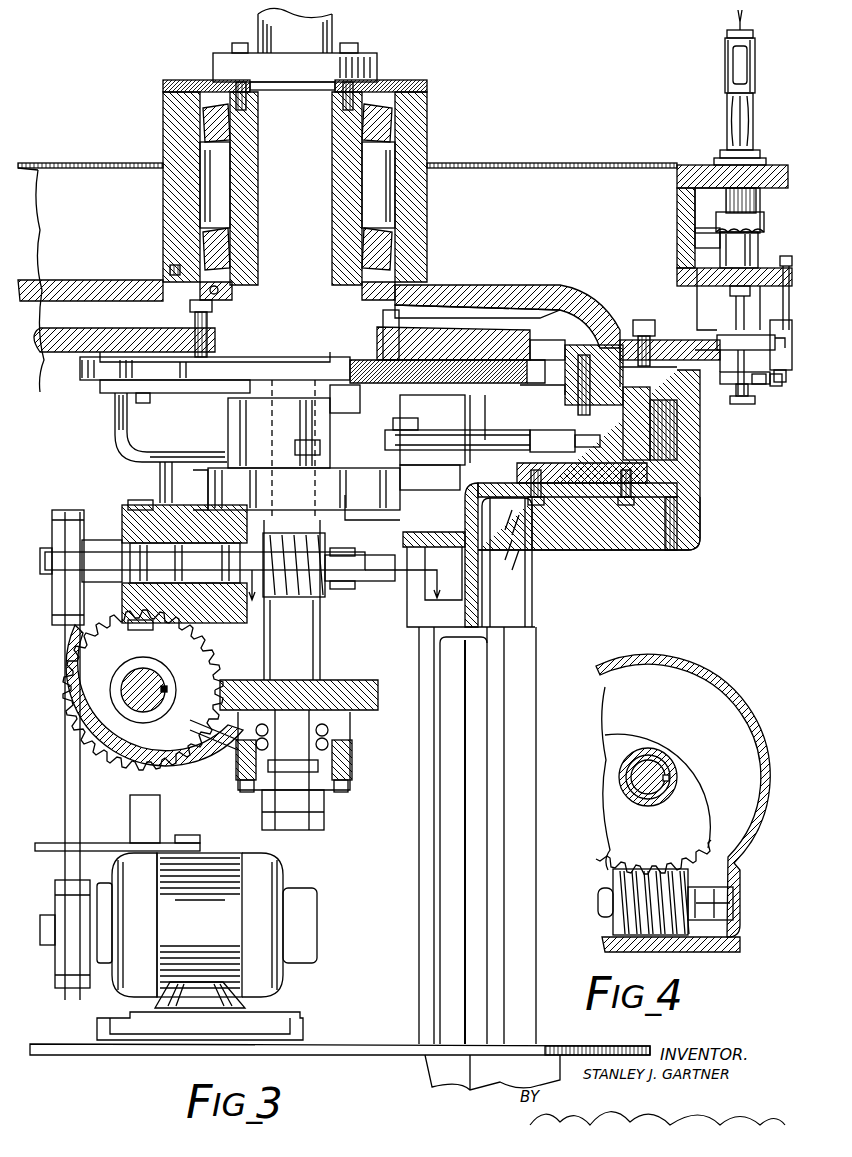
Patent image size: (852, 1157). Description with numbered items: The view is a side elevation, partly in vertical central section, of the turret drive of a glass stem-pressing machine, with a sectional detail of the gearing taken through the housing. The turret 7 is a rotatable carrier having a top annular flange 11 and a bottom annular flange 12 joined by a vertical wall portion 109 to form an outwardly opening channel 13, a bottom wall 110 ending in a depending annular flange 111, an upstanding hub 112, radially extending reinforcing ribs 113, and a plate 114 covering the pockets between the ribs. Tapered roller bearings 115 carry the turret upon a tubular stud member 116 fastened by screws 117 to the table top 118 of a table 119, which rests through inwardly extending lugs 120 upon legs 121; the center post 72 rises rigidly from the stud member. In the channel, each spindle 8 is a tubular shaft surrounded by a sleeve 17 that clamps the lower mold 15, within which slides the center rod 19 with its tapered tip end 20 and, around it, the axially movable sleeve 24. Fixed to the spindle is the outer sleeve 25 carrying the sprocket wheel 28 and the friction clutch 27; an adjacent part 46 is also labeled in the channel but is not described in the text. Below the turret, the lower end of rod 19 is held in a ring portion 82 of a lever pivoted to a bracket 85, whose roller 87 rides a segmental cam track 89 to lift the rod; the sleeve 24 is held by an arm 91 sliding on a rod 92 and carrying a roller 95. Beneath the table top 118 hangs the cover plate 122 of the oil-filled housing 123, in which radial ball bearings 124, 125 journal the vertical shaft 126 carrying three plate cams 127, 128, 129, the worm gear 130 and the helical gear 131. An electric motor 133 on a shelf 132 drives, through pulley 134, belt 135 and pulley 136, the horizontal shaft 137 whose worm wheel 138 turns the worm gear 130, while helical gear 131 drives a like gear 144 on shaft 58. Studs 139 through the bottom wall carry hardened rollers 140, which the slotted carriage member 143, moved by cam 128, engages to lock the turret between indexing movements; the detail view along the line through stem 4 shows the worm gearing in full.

In FIG. 3, the center post 72 is at (258, 27).
In FIG. 3, the hub 112 is at (430, 210).
In FIG. 3, the tapered roller bearings 115 is at (392, 118).
In FIG. 3, the tubular stud member 116 is at (370, 192).
In FIG. 3, the plate 114 is at (100, 170).
In FIG. 3, the reinforcing ribs 113 is at (40, 210).
In FIG. 3, the turret 7 is at (488, 285).
In FIG. 3, the bottom wall 110 is at (575, 290).
In FIG. 3, the table top 118 is at (150, 330).
In FIG. 3, the screws 117 is at (195, 312).
In FIG. 3, the cover plate 122 is at (222, 390).
In FIG. 3, the housing 123 is at (116, 448).
In FIG. 4, the housing 123 is at (735, 690).
In FIG. 3, the radial ball bearing 124 is at (320, 383).
In FIG. 3, the carriage member 143 is at (548, 360).
In FIG. 3, the rollers 140 is at (600, 355).
In FIG. 3, the studs 139 is at (636, 330).
In FIG. 3, the annular flange 111 is at (710, 410).
In FIG. 3, the table 119 is at (702, 500).
In FIG. 3, the plate cam 127 is at (385, 420).
In FIG. 3, the plate cam 128 is at (232, 440).
In FIG. 3, the plate cam 129 is at (268, 502).
In FIG. 3, the shaft 137 is at (104, 556).
In FIG. 4, the shaft 137 is at (600, 905).
In FIG. 3, the pulley 136 is at (62, 600).
In FIG. 3, the belt 135 is at (65, 805).
In FIG. 3, the worm wheel 138 is at (300, 597).
In FIG. 4, the worm wheel 138 is at (612, 880).
In FIG. 3, the worm gear 130 is at (355, 584).
In FIG. 4, the worm gear 130 is at (706, 848).
In FIG. 3, the stem 4 is at (341, 598).
In FIG. 3, the helical gear 131 is at (355, 672).
In FIG. 3, the shaft 126 is at (310, 622).
In FIG. 4, the shaft 126 is at (673, 782).
In FIG. 3, the radial ball bearing 125 is at (350, 770).
In FIG. 3, the helical gear 144 is at (168, 762).
In FIG. 3, the shaft 58 is at (128, 708).
In FIG. 3, the electric motor 133 is at (278, 890).
In FIG. 3, the pulley 134 is at (62, 970).
In FIG. 3, the shelf 132 is at (350, 1044).
In FIG. 3, the lugs 120 is at (542, 608).
In FIG. 3, the legs 121 is at (538, 755).
In FIG. 3, the tip end 20 is at (745, 22).
In FIG. 3, the lower mold 15 is at (753, 32).
In FIG. 3, the sleeve 17 is at (755, 66).
In FIG. 3, the spindle 8 is at (727, 100).
In FIG. 3, the top annular flange 11 is at (792, 165).
In FIG. 3, the vertical wall portion 109 is at (677, 195).
In FIG. 3, the channel 13 is at (700, 200).
In FIG. 3, the outer sleeve 25 is at (758, 202).
In FIG. 3, the sprocket wheel 28 is at (764, 230).
In FIG. 3, the gear 46 is at (700, 232).
In FIG. 3, the friction clutch 27 is at (720, 250).
In FIG. 3, the bottom annular flange 12 is at (700, 290).
In FIG. 3, the rod 92 is at (780, 308).
In FIG. 3, the sleeve 24 is at (735, 320).
In FIG. 3, the arm 91 is at (715, 340).
In FIG. 3, the rod 19 is at (738, 370).
In FIG. 3, the cam track 89 is at (740, 385).
In FIG. 3, the roller 87 is at (748, 396).
In FIG. 3, the bracket 85 is at (742, 404).
In FIG. 3, the ring portion 82 is at (760, 384).
In FIG. 3, the roller 95 is at (786, 386).